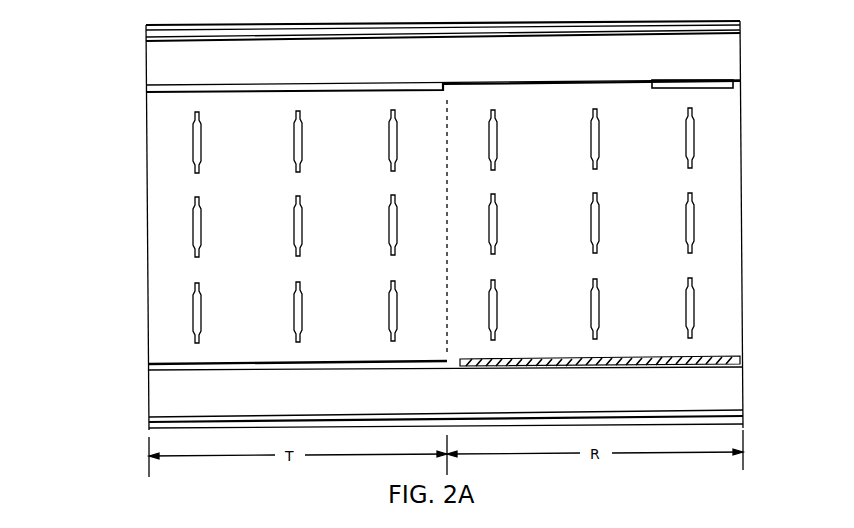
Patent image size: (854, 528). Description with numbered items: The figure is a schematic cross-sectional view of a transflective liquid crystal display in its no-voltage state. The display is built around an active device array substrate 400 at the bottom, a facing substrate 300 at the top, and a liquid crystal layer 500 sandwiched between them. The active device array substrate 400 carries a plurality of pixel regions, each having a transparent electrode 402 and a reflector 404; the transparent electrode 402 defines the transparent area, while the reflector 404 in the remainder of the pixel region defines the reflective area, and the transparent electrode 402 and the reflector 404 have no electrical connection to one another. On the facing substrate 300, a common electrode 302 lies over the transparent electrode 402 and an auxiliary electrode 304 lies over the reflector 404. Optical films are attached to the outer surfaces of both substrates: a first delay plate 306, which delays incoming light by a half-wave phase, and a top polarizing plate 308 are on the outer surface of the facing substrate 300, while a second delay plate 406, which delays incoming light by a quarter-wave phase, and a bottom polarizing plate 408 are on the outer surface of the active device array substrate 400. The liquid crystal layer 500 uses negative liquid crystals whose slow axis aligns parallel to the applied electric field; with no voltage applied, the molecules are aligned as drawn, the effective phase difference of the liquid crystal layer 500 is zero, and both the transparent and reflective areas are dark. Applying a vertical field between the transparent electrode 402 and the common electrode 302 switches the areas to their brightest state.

The facing substrate 300 is at (712, 52).
The common electrode 302 is at (150, 88).
The auxiliary electrode 304 is at (693, 88).
The first delay plate 306 is at (150, 40).
The top polarizing plate 308 is at (150, 27).
The active device array substrate 400 is at (718, 385).
The transparent electrode 402 is at (176, 364).
The reflector 404 is at (743, 345).
The second delay plate 406 is at (150, 420).
The bottom polarizing plate 408 is at (150, 428).
The liquid crystal layer 500 is at (714, 192).